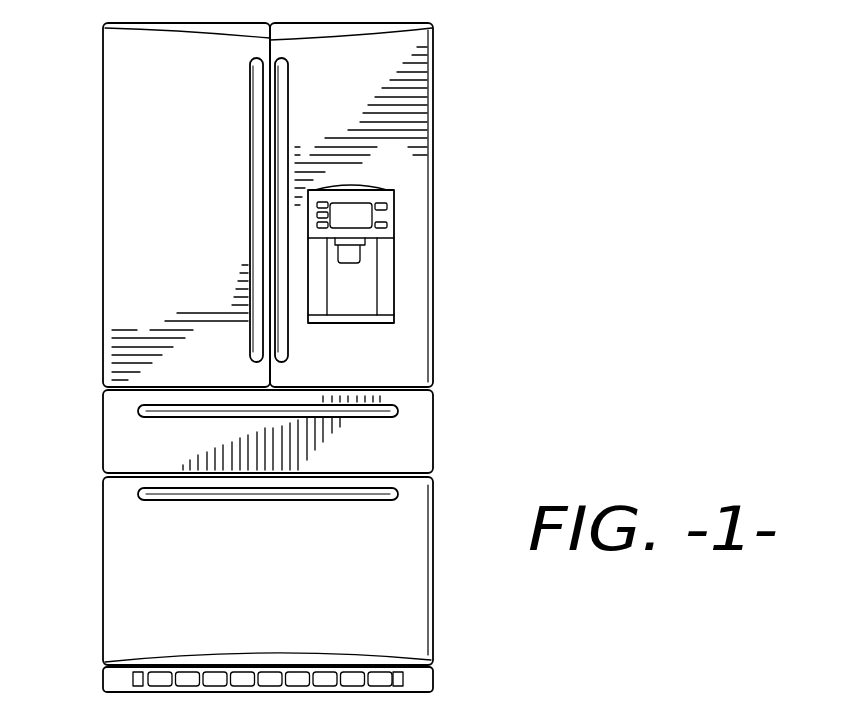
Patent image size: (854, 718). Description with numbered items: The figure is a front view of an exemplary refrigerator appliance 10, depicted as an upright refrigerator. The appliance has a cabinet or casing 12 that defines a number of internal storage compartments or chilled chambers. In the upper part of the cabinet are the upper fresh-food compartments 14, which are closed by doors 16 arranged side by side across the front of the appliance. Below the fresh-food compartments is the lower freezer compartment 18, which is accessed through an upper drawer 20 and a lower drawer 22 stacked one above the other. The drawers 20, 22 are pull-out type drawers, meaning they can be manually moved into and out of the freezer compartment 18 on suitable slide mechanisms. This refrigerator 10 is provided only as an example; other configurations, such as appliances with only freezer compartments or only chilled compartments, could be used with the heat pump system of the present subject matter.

The refrigerator appliance 10 is at (491, 120).
The cabinet or casing 12 is at (433, 296).
The upper fresh-food compartments 14 is at (135, 179).
The doors 16 is at (172, 266).
The lower freezer compartment 18 is at (402, 440).
The upper drawer 20 is at (162, 458).
The lower drawer 22 is at (287, 588).